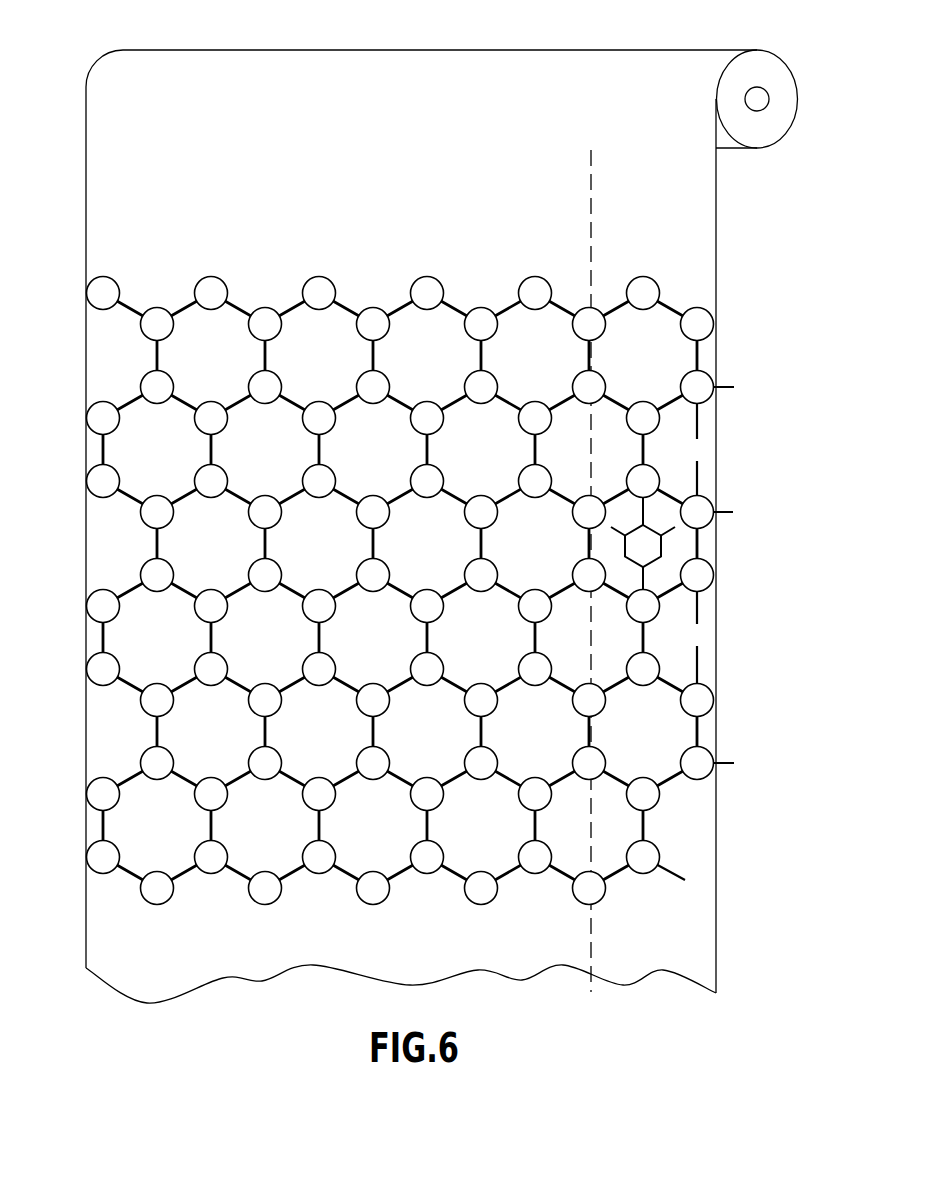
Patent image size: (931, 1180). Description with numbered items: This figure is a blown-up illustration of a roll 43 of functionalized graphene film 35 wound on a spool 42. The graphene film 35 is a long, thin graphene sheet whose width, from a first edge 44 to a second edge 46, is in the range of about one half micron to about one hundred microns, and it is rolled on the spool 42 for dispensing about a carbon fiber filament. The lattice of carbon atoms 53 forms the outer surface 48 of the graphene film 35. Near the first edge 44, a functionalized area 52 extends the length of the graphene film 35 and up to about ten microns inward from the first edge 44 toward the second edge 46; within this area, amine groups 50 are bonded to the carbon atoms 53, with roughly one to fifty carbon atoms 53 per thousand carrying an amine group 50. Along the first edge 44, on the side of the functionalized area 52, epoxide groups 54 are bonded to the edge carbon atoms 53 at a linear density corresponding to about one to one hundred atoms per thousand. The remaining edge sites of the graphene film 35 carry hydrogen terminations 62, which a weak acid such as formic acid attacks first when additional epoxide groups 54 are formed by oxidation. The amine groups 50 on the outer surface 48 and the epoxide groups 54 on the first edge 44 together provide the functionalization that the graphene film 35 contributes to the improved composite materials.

The graphene film 35 is at (73, 347).
The spool 42 is at (757, 98).
The roll 43 is at (207, 73).
The first edge 44 is at (717, 298).
The second edge 46 is at (86, 567).
The outer surface 48 is at (113, 228).
The amine groups 50 is at (645, 543).
The functionalized area 52 is at (666, 264).
The carbon atoms 53 is at (265, 324).
The epoxide groups 54 is at (704, 442).
The hydrogen terminations 62 is at (745, 748).